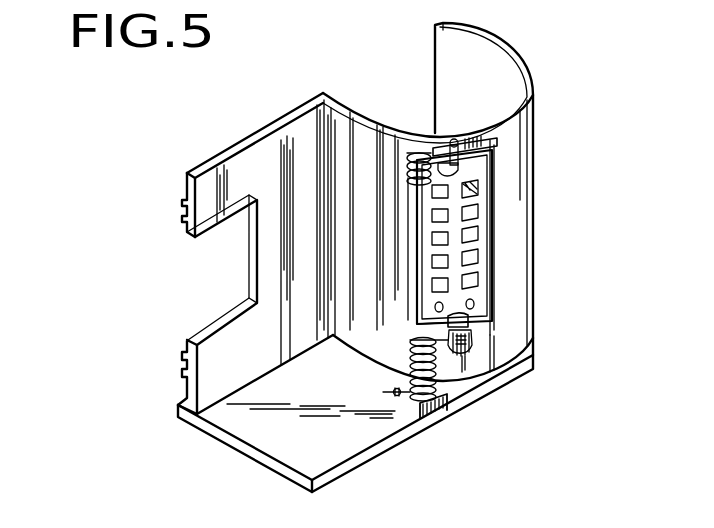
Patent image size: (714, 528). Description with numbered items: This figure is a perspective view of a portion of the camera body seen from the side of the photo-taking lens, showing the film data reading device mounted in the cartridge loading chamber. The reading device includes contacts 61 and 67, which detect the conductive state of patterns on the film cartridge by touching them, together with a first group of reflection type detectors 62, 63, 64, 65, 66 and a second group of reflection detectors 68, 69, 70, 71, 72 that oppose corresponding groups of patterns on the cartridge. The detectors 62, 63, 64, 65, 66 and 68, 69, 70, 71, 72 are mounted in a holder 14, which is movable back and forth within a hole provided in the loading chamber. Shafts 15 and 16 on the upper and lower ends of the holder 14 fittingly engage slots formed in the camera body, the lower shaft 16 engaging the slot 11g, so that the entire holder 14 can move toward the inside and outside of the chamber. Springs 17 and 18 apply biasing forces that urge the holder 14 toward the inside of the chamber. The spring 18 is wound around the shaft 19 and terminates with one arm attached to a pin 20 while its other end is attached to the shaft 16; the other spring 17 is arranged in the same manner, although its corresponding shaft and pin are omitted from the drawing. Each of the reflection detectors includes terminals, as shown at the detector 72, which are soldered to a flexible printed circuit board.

The slot 11g is at (463, 358).
The holder 14 is at (492, 290).
The shaft 15 is at (467, 143).
The shaft 16 is at (491, 345).
The spring 17 is at (418, 150).
The spring 18 is at (404, 400).
The shaft 19 is at (437, 343).
The pin 20 is at (399, 398).
The contact 61 is at (420, 310).
The reflection detector 62 is at (432, 284).
The reflection detector 63 is at (432, 261).
The reflection detector 64 is at (432, 238).
The reflection detector 65 is at (432, 215).
The reflection detector 66 is at (432, 192).
The contact 67 is at (472, 338).
The reflection detector 68 is at (478, 282).
The reflection detector 69 is at (478, 256).
The reflection detector 70 is at (478, 235).
The reflection detector 71 is at (478, 209).
The reflection detector 72 is at (478, 182).